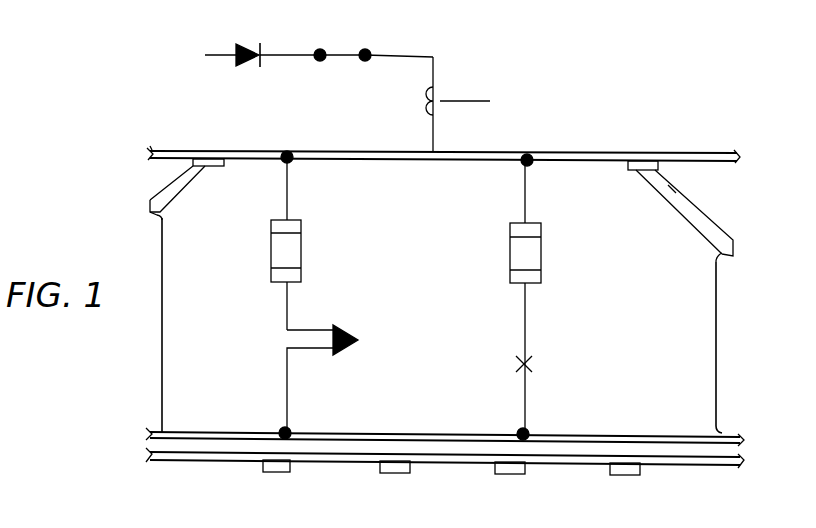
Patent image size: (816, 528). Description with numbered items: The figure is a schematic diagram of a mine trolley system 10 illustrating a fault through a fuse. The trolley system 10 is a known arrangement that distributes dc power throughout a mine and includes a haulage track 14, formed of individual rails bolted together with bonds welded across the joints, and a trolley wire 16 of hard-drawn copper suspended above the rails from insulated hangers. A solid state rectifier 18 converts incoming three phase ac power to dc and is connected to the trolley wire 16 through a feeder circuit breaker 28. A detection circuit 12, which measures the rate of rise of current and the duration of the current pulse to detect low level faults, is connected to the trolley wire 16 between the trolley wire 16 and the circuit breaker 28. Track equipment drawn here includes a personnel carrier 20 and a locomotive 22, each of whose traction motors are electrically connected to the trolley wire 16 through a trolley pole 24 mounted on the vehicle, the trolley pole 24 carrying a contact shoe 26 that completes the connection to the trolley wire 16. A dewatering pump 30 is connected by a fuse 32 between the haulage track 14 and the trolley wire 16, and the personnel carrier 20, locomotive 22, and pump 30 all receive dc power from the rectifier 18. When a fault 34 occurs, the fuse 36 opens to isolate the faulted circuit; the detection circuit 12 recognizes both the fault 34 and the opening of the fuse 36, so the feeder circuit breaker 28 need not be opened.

The mine trolley system 10 is at (652, 130).
The detection circuit 12 is at (462, 101).
The haulage track 14 is at (233, 432).
The trolley wire 16 is at (386, 150).
The rectifier 18 is at (246, 66).
The personnel carrier 20 is at (163, 262).
The locomotive 22 is at (716, 332).
The trolley pole 24 is at (172, 204).
The contact shoe 26 is at (210, 168).
The feeder circuit breaker 28 is at (368, 46).
The dewatering pump 30 is at (352, 331).
The fuse 32 is at (302, 240).
The fault 34 is at (532, 362).
The fuse 36 is at (541, 258).